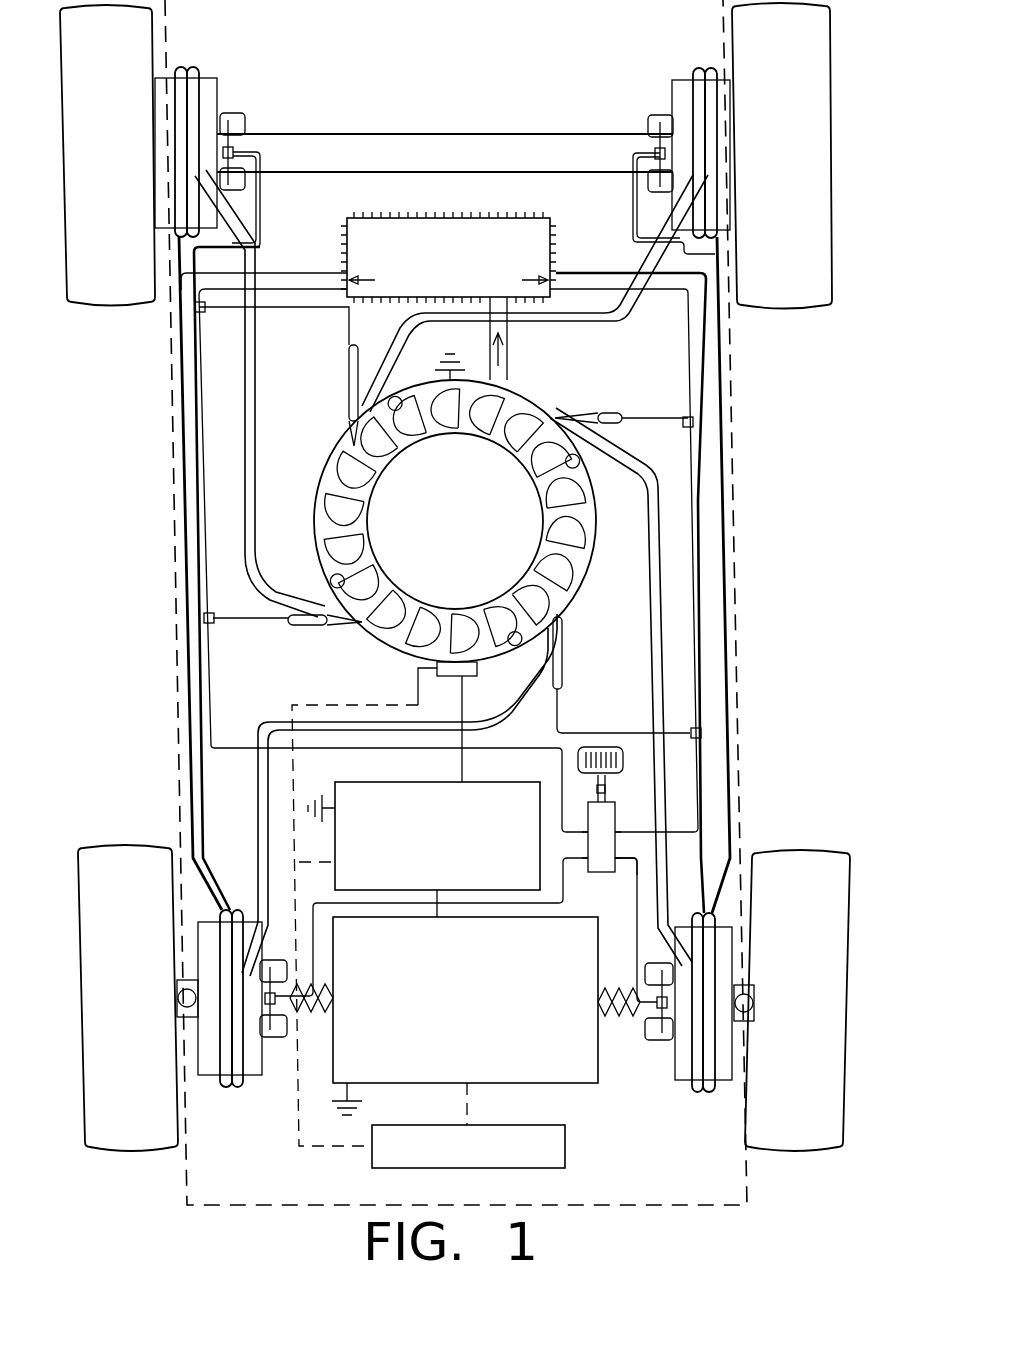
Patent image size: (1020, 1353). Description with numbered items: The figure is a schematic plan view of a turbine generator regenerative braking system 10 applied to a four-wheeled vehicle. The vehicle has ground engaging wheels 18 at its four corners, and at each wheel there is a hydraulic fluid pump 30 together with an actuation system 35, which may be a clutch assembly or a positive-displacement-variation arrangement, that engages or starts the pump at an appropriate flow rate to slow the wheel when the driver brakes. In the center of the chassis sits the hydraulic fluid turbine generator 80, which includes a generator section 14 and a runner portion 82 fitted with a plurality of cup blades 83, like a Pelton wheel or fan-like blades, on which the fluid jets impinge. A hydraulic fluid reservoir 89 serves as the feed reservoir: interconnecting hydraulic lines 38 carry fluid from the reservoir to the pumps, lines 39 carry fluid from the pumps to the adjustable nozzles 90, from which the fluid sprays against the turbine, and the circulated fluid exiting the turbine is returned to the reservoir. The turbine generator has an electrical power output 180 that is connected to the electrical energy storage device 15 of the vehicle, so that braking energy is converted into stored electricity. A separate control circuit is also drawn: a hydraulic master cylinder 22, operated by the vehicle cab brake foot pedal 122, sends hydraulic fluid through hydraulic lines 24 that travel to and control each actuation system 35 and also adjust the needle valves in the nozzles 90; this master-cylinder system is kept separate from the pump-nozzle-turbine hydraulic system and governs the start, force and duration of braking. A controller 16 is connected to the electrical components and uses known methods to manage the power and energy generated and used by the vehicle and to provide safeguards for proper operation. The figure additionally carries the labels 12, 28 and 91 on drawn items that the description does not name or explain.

The turbine generator regenerative braking system 10 is at (436, 46).
The engine/motor 12 is at (590, 1078).
The generator section 14 is at (454, 522).
The electrical energy storage device 15 is at (500, 790).
The controller 16 is at (566, 1150).
The ground engaging wheels 18 is at (93, 342).
The hydraulic master cylinder 22 is at (605, 875).
The hydraulic line 24 is at (262, 200).
The sensor lead 28 is at (288, 626).
The hydraulic fluid pumps 30 is at (238, 83).
The actuation system 35 is at (632, 872).
The hydraulic lines 38 is at (303, 272).
The lines 39 is at (247, 380).
The hydraulic fluid turbine generator 80 is at (380, 670).
The runner portion 82 is at (328, 530).
The cup blades 83 is at (330, 504).
The hydraulic fluid reservoir 89 is at (455, 218).
The adjustable nozzles 90 is at (347, 388).
The sensor 91 is at (618, 412).
The vehicle cab brake foot pedal 122 is at (620, 775).
The electrical power output 180 is at (477, 670).